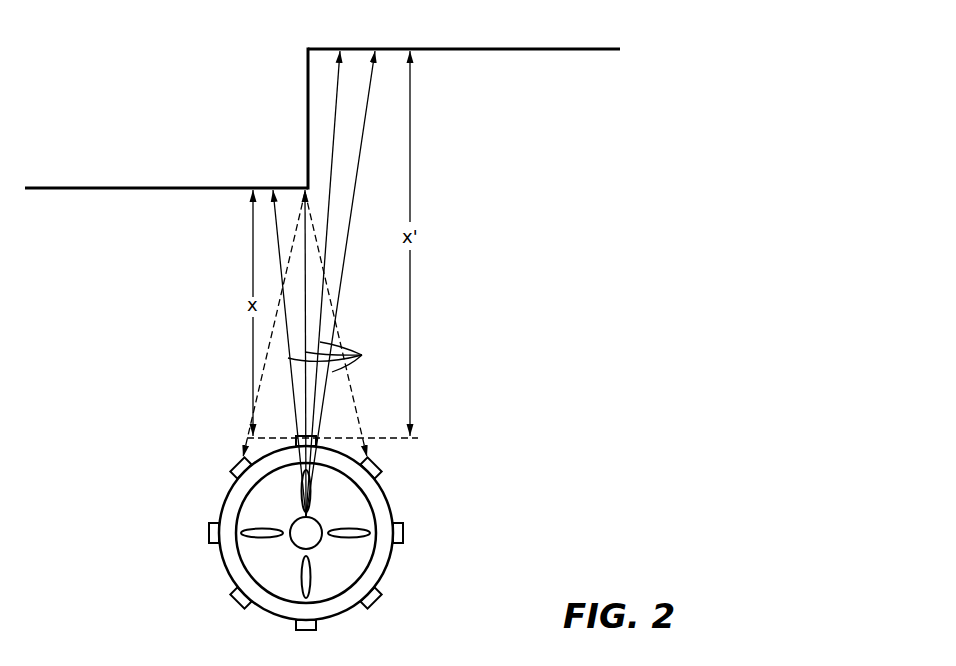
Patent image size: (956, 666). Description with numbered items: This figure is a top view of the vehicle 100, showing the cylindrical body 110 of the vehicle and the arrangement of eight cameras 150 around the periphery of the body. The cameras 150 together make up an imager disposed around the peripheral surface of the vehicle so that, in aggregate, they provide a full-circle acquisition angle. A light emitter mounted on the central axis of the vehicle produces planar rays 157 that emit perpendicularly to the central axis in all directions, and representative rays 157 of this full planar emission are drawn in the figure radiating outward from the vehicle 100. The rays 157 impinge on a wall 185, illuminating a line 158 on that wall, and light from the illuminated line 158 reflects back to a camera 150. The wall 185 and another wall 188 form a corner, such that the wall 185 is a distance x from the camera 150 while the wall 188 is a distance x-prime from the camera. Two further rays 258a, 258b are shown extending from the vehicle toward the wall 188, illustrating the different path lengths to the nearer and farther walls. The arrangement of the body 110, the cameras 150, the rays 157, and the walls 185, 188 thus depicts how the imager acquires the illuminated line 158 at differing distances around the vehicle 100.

The vehicle 100 is at (291, 517).
The cylindrical body 110 is at (388, 505).
The cameras 150 is at (297, 437).
The planar rays 157 is at (324, 353).
The illuminated line 158 is at (305, 186).
The wall 185 is at (68, 186).
The wall 188 is at (520, 48).
The reflected beam 258a is at (340, 47).
The reflected beam 258b is at (375, 47).